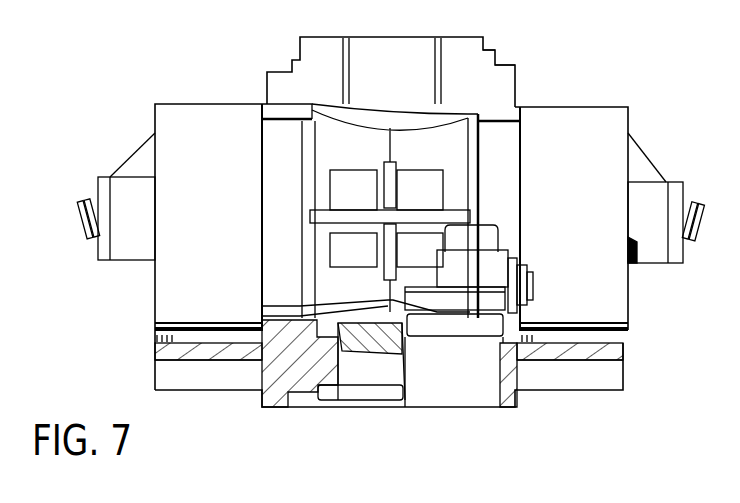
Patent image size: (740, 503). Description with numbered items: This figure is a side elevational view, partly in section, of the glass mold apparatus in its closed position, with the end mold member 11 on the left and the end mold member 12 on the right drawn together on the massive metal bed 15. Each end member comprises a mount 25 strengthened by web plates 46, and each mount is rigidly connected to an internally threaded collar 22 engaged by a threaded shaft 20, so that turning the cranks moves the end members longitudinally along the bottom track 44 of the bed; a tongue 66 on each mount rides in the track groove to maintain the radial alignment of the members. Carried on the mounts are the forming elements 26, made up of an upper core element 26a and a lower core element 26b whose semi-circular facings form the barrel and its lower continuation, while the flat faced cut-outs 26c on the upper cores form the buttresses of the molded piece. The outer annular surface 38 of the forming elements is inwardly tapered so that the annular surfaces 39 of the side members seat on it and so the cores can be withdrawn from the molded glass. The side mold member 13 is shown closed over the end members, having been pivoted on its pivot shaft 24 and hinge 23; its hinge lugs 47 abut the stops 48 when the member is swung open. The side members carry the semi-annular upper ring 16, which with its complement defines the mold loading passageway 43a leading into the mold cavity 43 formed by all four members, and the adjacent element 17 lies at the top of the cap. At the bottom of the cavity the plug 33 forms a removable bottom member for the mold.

The end mold member 11 is at (218, 104).
The end mold member 12 is at (592, 107).
The side mold member 13 is at (460, 37).
The bed 15 is at (576, 378).
The upper ring 16 is at (493, 50).
The cap step 17 is at (497, 66).
The threaded shaft 20 is at (78, 216).
The internally threaded collar 22 is at (148, 230).
The hinge 23 is at (488, 283).
The pivot shaft 24 is at (534, 290).
The mount 25 is at (226, 163).
The forming elements 26 is at (368, 163).
The upper core element 26a is at (377, 168).
The lower core element 26b is at (407, 280).
The flat faced cut-outs 26c is at (428, 220).
The plug 33 is at (389, 381).
The outer annular surface 38 is at (342, 120).
The annular surfaces 39 is at (283, 118).
The mold cavity 43 is at (400, 128).
The mold loading passageway 43a is at (420, 86).
The bottom track 44 is at (156, 348).
The web plates 46 is at (137, 157).
The hinge lugs 47 is at (432, 334).
The stops 48 is at (464, 336).
The tongue 66 is at (220, 324).